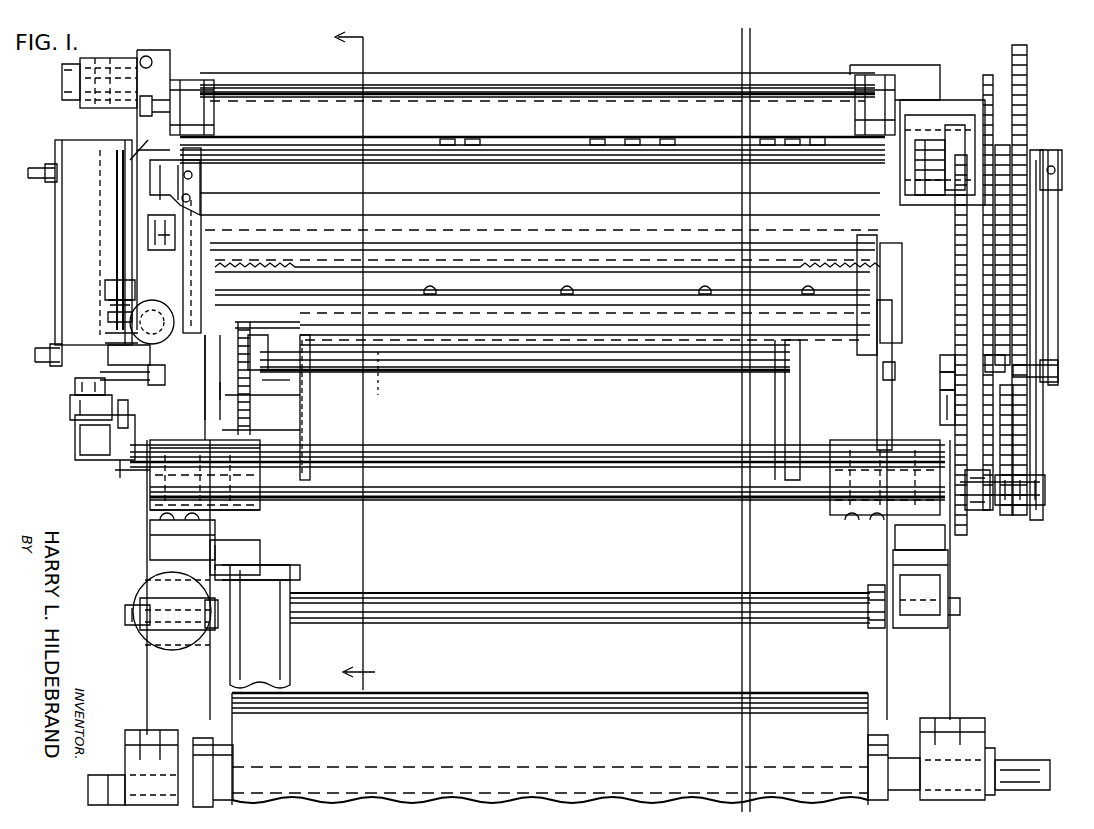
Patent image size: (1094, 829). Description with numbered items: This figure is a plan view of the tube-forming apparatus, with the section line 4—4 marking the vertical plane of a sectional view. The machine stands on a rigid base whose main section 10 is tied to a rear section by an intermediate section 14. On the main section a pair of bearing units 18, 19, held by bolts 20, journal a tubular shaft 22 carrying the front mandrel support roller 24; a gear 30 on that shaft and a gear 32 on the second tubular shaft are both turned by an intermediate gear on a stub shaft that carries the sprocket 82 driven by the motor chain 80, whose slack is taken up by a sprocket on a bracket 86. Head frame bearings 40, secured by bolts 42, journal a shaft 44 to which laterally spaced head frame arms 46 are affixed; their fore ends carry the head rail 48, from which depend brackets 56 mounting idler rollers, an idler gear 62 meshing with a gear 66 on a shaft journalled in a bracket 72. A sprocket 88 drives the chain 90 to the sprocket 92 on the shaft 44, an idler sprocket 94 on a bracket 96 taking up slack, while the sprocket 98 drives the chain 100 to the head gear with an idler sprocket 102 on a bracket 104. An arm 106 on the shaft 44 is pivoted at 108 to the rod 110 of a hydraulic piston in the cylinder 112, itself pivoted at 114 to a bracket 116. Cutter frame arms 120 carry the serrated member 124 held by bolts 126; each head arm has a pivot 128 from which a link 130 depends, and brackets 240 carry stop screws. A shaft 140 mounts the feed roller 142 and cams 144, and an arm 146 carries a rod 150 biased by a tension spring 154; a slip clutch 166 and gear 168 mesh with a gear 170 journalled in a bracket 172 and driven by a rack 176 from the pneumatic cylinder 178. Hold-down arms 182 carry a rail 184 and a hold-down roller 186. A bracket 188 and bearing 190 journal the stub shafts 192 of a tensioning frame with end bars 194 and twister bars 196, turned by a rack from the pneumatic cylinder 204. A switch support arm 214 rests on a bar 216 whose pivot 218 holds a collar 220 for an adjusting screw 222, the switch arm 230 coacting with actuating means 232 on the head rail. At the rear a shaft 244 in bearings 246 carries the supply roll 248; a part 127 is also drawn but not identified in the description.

The section line 4— 4 is at (340, 361).
The main section 10 is at (150, 538).
The intermediate section 14 is at (939, 667).
The bearing unit 18 is at (205, 80).
The bearing unit 19 is at (865, 90).
The bolts 20 is at (144, 70).
The tubular shaft 22 is at (132, 155).
The front mandrel support roller 24 is at (553, 82).
The gear 30 is at (988, 80).
The gear 32 is at (975, 258).
The head frame bearings 40 is at (165, 545).
The bolts 42 is at (225, 528).
The shaft 44 is at (523, 495).
The head frame arms 46 is at (208, 412).
The head rail 48 is at (590, 155).
The brackets 56 is at (447, 138).
The idler gear 62 is at (950, 140).
The gear 66 is at (930, 195).
The bracket 72 is at (918, 138).
The chain 80 is at (1035, 235).
The sprocket 82 is at (1020, 45).
The bracket 86 is at (985, 352).
The sprocket 88 is at (1003, 145).
The chain 90 is at (1013, 400).
The sprocket 92 is at (1010, 505).
The idler sprocket 94 is at (1010, 372).
The bracket 96 is at (1058, 273).
The sprocket 98 is at (975, 510).
The chain 100 is at (945, 365).
The idler sprocket 102 is at (945, 378).
The bracket 104 is at (945, 405).
The arm 106 is at (88, 437).
The pivot 108 is at (75, 428).
The rod 110 is at (75, 390).
The cylinder 112 is at (63, 272).
The pivot 114 is at (62, 118).
The bracket 116 is at (122, 60).
The arms 120 is at (228, 415).
The member 124 is at (360, 292).
The bolts 126 is at (585, 280).
The shaft 127 is at (100, 375).
The pivot 128 is at (190, 380).
The link 130 is at (225, 385).
The shaft 140 is at (110, 358).
The feed roller 142 is at (432, 372).
The cams 144 is at (225, 338).
The arm 146 is at (70, 410).
The rod 150 is at (125, 465).
The tension spring 154 is at (128, 415).
The slip clutch 166 is at (255, 355).
The gear 168 is at (262, 328).
The gear 170 is at (240, 402).
The bracket 172 is at (290, 382).
The rack 176 is at (245, 432).
The cylinder 178 is at (268, 600).
The arms 182 is at (325, 432).
The rail 184 is at (570, 350).
The hold-down roller 186 is at (372, 360).
The bracket 188 is at (160, 570).
The bearing 190 is at (930, 578).
The stub shaft 192 is at (125, 618).
The end bars 194 is at (212, 638).
The twister bars 196 is at (565, 605).
The pneumatic cylinder 204 is at (160, 635).
The switch support arm 214 is at (118, 252).
The bar 216 is at (110, 305).
The pivot 218 is at (108, 320).
The collar 220 is at (105, 340).
The adjusting screw 222 is at (106, 290).
The switch arm 230 is at (145, 227).
The switch arm actuating means 232 is at (134, 187).
The brackets 240 is at (193, 275).
The shaft 244 is at (1022, 775).
The bearings 246 is at (135, 750).
The supply roll 248 is at (562, 705).